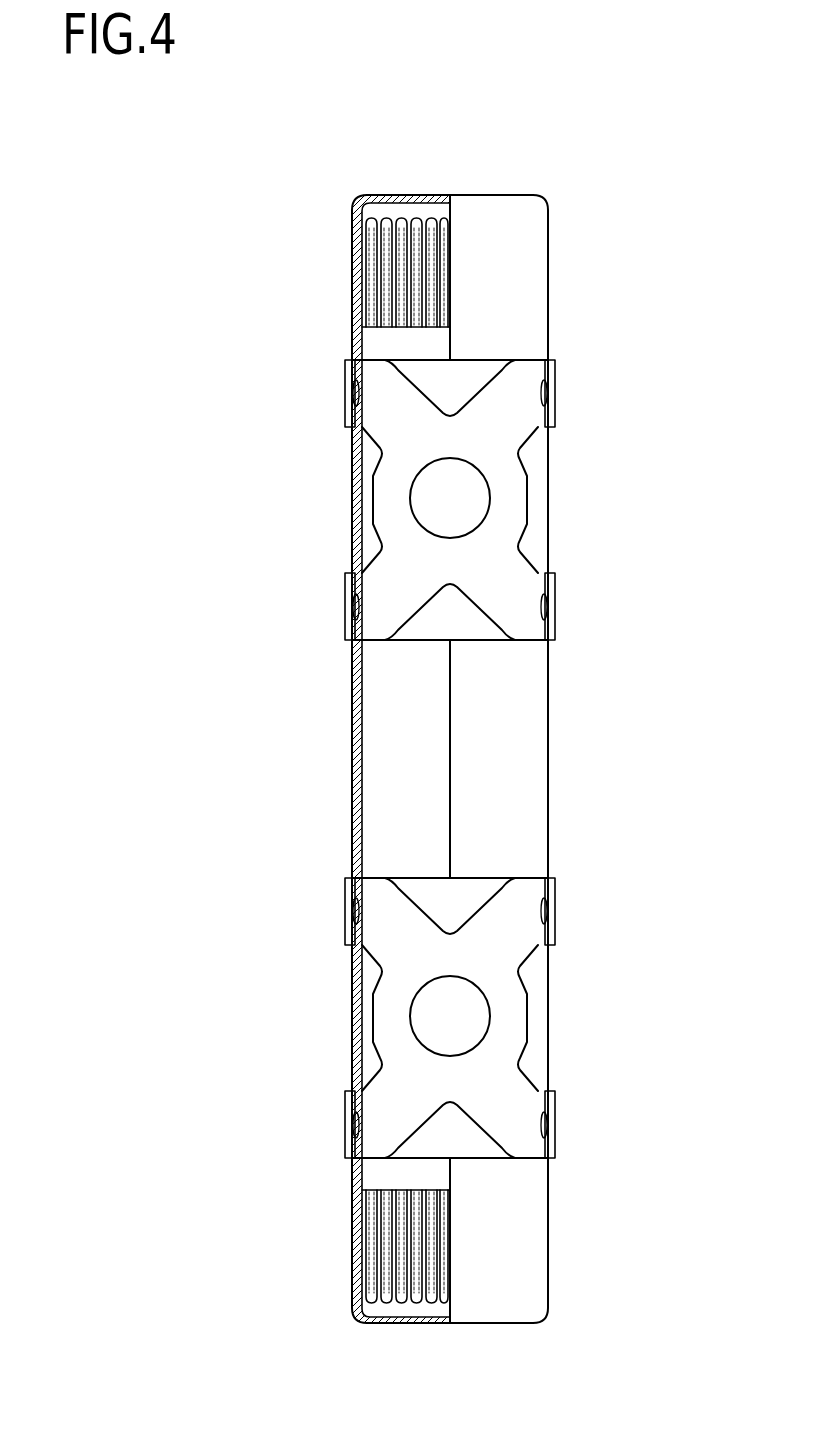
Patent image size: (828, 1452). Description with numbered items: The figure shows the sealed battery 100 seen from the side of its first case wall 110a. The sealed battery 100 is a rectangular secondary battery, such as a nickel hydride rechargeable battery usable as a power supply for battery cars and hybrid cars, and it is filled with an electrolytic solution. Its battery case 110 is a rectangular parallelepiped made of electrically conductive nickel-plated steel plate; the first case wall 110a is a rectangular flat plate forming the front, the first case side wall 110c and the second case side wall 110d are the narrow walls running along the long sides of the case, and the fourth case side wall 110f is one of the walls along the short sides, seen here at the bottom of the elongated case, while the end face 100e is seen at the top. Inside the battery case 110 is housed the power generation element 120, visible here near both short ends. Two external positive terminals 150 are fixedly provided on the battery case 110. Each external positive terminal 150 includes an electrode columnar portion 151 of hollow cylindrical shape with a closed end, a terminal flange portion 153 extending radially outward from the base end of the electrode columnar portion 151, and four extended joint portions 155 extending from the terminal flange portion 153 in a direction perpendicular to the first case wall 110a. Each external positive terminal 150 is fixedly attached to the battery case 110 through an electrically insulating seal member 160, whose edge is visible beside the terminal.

The sealed battery 100 is at (587, 166).
The top end face of housing 100e is at (418, 193).
The battery case 110 is at (525, 282).
The first case wall 110a is at (507, 693).
The first case side wall 110c is at (549, 792).
The second case side wall 110d is at (353, 768).
The fourth case side wall 110f is at (430, 1325).
The power generation element 120 is at (387, 280).
The external positive terminal 150 is at (453, 500).
The electrode columnar portion 151 is at (418, 1020).
The terminal flange portion 153 is at (384, 937).
The extended joint portion 155 is at (352, 913).
The seal member 160 is at (363, 552).